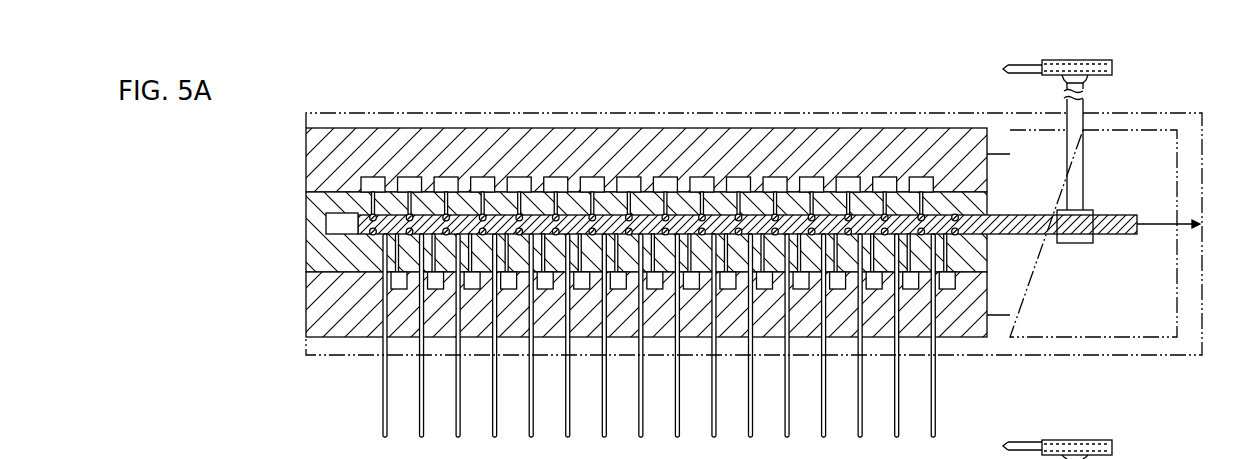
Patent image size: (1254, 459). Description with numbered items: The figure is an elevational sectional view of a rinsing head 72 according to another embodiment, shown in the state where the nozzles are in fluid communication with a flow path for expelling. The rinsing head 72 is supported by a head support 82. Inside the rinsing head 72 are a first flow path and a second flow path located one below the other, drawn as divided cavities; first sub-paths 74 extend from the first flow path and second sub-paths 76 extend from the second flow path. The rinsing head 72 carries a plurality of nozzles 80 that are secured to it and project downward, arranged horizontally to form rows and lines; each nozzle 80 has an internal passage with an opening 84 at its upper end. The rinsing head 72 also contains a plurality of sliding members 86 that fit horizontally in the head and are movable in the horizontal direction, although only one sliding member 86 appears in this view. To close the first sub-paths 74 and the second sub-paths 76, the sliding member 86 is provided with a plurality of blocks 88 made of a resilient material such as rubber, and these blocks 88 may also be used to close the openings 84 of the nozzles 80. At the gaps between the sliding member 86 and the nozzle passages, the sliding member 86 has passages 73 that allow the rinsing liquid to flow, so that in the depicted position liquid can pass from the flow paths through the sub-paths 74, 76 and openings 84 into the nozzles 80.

The rinsing head 72 is at (275, 343).
The passages 73 is at (337, 228).
The first sub-paths 74 is at (784, 232).
The second sub-paths 76 is at (813, 272).
The nozzles 80 is at (748, 393).
The head support 82 is at (866, 113).
The opening 84 is at (827, 233).
The sliding member 86 is at (1148, 215).
The blocks 88 is at (904, 212).